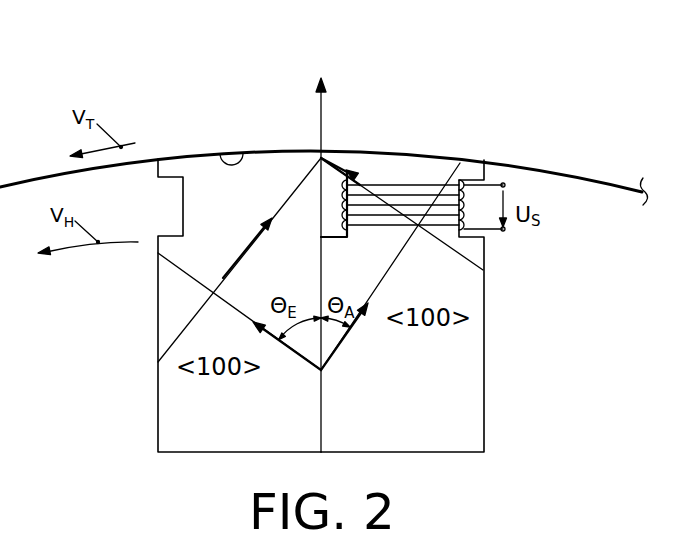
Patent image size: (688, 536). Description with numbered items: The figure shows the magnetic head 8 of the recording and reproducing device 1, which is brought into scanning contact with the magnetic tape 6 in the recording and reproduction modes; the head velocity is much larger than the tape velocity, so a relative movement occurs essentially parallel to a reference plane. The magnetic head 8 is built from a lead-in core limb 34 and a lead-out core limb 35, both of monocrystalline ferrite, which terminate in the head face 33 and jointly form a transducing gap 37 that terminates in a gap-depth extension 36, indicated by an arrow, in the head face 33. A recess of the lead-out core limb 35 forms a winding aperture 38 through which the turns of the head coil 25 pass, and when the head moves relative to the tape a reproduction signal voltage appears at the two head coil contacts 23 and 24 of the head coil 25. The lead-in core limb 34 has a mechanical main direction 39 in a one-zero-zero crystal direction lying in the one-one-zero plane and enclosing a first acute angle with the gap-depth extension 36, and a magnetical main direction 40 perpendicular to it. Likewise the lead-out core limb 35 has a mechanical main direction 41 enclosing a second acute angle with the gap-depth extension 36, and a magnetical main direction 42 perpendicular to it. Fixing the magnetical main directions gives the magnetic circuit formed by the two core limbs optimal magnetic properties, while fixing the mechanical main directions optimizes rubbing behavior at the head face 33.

The device 1 is at (502, 88).
The magnetic tape 6 is at (547, 170).
The magnetic head 8 is at (502, 465).
The head coil contact 23 is at (505, 187).
The head coil contact 24 is at (504, 231).
The head coil 25 is at (390, 225).
The head face 33 is at (218, 153).
The lead-in core limb 34 is at (175, 407).
The lead-out core limb 35 is at (465, 385).
The gap-depth extension 36 is at (322, 112).
The transducing gap 37 is at (314, 154).
The winding aperture 38 is at (330, 218).
The mechanical main direction 39 is at (303, 362).
The magnetical main direction 40 is at (248, 248).
The mechanical main direction 41 is at (337, 347).
The magnetical main direction 42 is at (357, 178).